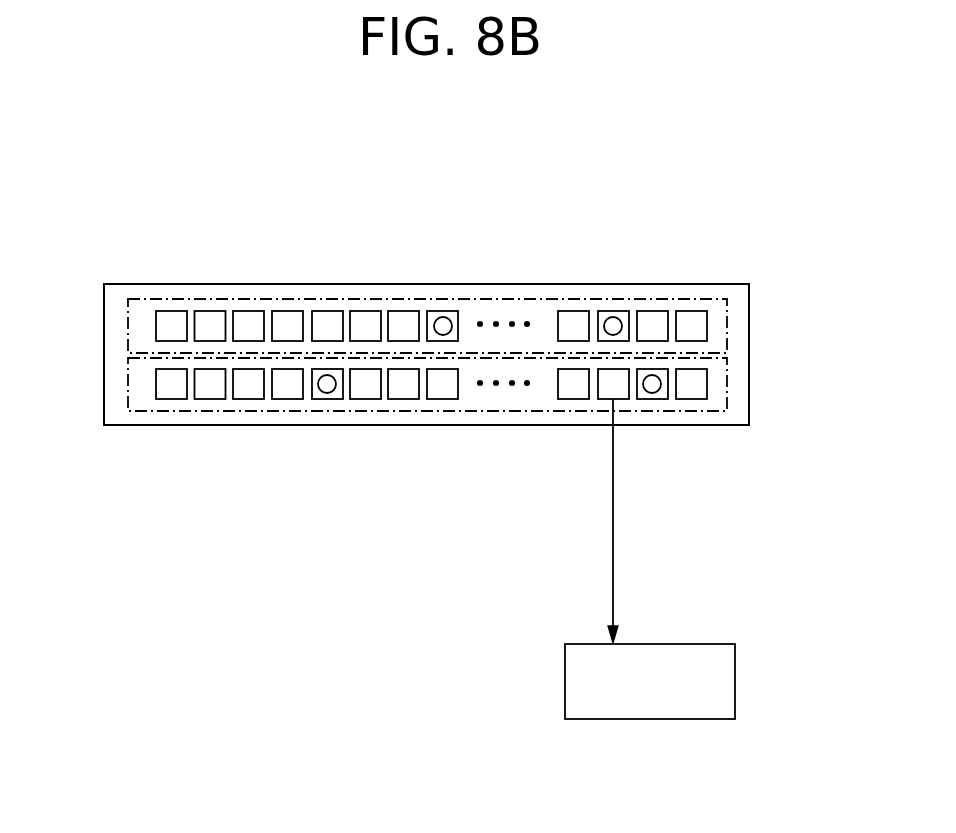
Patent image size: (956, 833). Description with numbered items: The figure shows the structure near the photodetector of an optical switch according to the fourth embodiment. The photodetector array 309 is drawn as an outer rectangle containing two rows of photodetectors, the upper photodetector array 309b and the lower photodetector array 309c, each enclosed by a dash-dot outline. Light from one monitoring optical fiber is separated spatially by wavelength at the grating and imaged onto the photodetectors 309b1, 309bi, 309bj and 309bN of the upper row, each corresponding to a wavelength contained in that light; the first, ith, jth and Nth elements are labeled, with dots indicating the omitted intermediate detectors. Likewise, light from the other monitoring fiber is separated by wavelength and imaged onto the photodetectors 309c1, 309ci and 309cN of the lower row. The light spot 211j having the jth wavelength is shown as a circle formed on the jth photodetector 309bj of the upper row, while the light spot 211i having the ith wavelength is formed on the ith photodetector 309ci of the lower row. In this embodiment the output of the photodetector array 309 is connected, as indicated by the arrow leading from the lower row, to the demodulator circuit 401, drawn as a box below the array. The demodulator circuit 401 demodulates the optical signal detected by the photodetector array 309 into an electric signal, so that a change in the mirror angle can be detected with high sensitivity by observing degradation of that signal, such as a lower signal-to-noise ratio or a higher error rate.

The photodetector array 309 is at (282, 190).
The photodetector array 309b is at (147, 298).
The photodetector array 309c is at (143, 410).
The photodetector 309b1 is at (171, 311).
The photodetector 309bi is at (327, 311).
The photodetector 309bj is at (615, 311).
The photodetector 309bN is at (690, 311).
The photodetector 309c1 is at (170, 399).
The photodetector 309ci is at (320, 399).
The photodetector 309cN is at (687, 399).
The light spot 211i is at (330, 393).
The light spot 211j is at (612, 316).
The demodulator circuit 401 is at (685, 643).